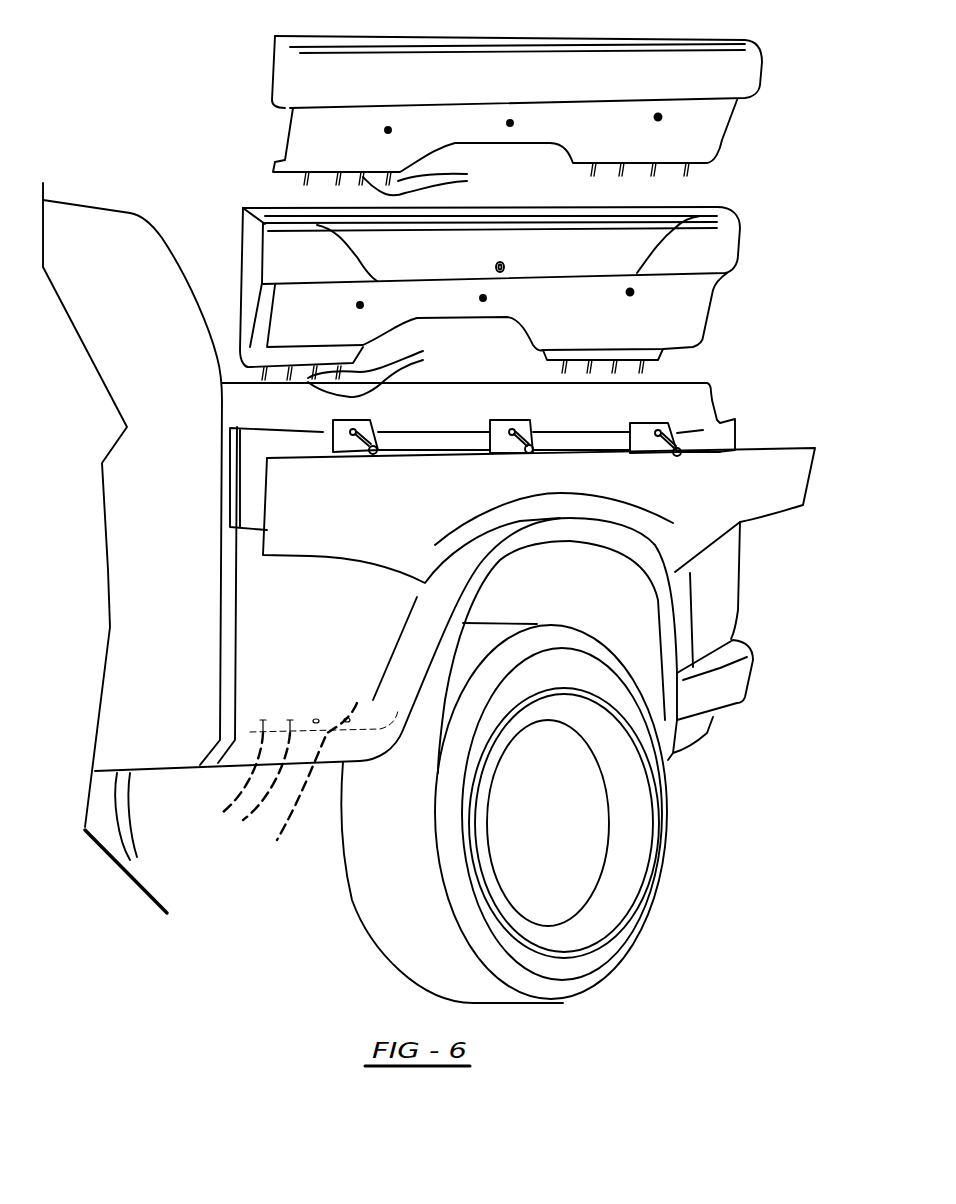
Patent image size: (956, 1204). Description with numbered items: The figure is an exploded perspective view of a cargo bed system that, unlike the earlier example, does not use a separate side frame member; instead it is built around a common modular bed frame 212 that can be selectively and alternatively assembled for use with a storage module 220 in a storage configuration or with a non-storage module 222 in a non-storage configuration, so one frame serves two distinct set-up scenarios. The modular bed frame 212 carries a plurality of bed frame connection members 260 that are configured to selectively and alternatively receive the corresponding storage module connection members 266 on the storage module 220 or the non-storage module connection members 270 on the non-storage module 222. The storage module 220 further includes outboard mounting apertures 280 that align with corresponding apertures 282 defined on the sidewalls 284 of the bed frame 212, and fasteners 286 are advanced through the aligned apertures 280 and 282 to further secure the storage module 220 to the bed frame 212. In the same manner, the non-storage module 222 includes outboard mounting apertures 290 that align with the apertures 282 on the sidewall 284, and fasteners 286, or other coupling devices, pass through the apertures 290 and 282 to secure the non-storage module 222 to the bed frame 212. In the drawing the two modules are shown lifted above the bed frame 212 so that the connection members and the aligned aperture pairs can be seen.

The modular bed frame 212 is at (324, 789).
The storage module 220 is at (722, 247).
The non-storage module 222 is at (740, 68).
The bed frame connection members 260 is at (270, 775).
The storage module connection members 266 is at (383, 365).
The non-storage module connection members 270 is at (431, 181).
The outboard mounting apertures 280 is at (360, 305).
The apertures 282 is at (367, 443).
The sidewalls 284 is at (437, 442).
The fasteners 286 is at (368, 455).
The outboard mounting apertures 290 is at (388, 130).